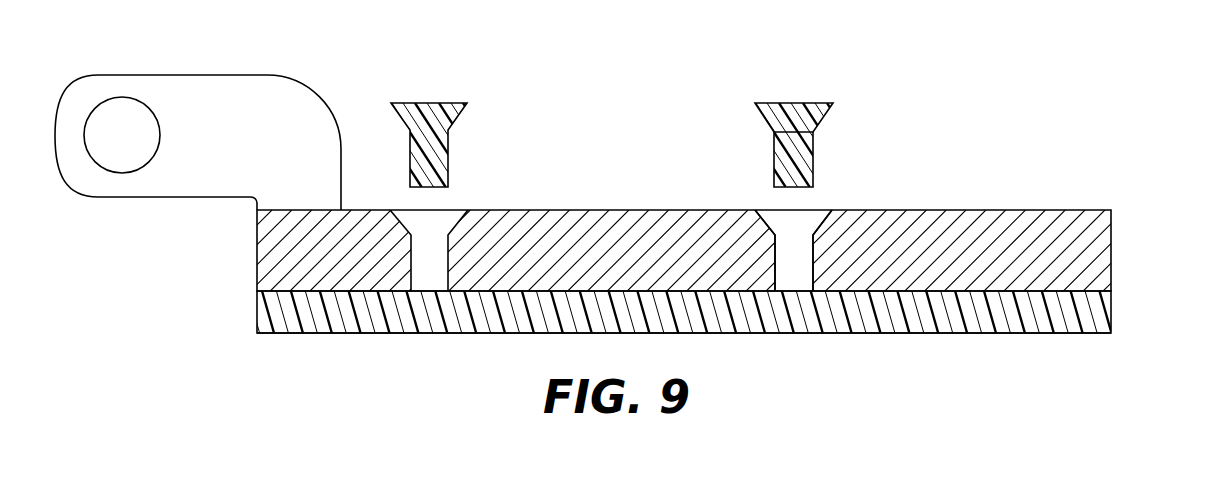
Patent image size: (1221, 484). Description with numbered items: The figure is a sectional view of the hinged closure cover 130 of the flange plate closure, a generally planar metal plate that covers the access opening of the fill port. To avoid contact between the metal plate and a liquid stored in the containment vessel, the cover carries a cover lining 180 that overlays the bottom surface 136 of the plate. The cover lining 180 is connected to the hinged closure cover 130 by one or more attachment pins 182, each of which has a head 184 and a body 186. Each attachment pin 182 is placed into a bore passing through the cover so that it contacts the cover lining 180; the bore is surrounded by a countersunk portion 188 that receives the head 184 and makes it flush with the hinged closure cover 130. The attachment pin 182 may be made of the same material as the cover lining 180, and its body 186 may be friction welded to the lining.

The hinged closure cover 130 is at (1112, 248).
The bottom surface 136 is at (1068, 318).
The cover lining 180 is at (888, 334).
The attachment pin 182 is at (824, 107).
The head 184 is at (817, 121).
The body 186 is at (810, 153).
The countersunk hole 188 is at (818, 230).